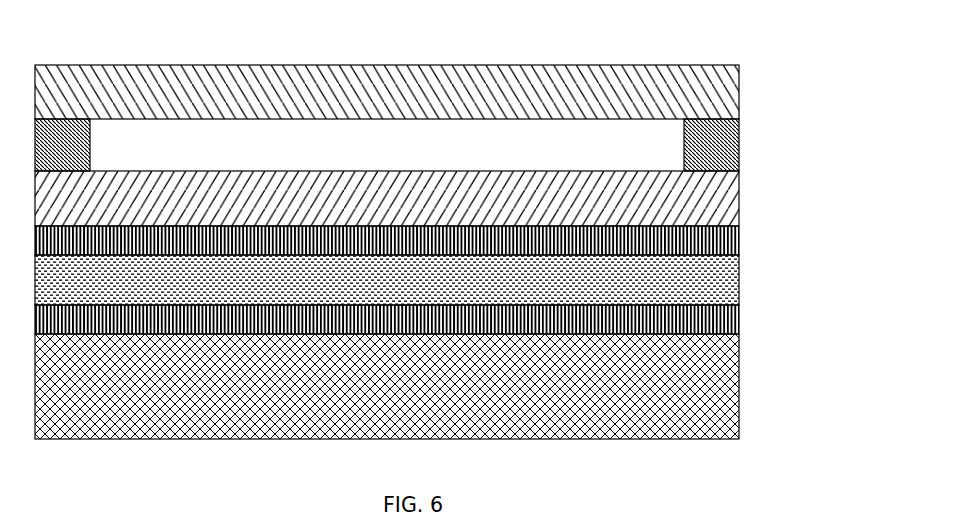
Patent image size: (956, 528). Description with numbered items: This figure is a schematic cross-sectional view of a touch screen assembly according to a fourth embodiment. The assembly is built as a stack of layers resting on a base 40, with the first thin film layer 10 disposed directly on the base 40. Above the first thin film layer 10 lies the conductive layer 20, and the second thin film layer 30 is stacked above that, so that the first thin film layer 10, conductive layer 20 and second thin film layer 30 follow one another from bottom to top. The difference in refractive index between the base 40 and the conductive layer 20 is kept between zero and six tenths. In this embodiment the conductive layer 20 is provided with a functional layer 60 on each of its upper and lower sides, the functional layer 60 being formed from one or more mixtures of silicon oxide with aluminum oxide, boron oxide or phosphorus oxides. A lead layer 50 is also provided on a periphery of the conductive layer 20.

The first thin film layer 10 is at (690, 280).
The conductive layer 20 is at (685, 202).
The second thin film layer 30 is at (707, 146).
The base 40 is at (690, 385).
The lead layer 50 is at (745, 71).
The functional layer 60 is at (680, 322).